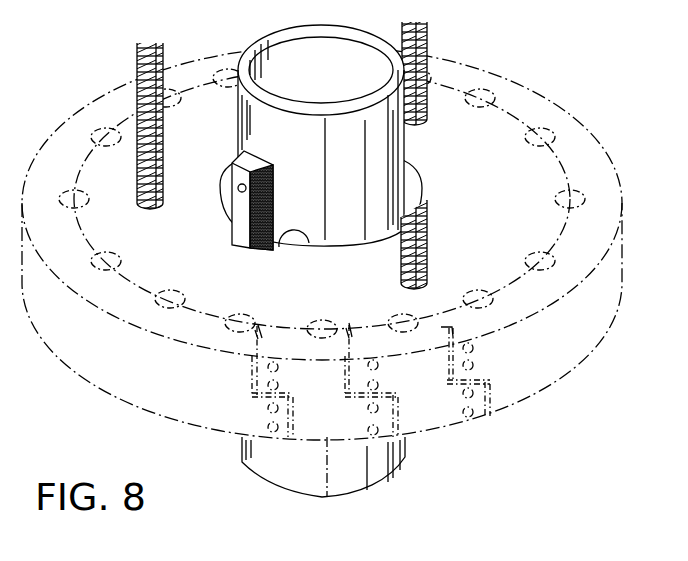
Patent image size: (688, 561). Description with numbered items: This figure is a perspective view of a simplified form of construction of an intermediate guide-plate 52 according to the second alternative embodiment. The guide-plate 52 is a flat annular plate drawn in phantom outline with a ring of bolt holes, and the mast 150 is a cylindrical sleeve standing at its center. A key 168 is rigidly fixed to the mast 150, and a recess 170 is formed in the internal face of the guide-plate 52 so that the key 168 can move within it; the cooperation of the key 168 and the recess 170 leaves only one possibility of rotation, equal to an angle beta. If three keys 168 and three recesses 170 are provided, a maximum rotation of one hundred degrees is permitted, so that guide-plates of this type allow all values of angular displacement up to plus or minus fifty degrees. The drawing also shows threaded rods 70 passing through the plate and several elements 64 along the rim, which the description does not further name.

The intermediate guide-plate 52 is at (543, 86).
The keys 64 is at (357, 443).
The threaded bolt 70 is at (137, 62).
The mast 150 is at (376, 191).
The key 168 is at (238, 208).
The recess 170 is at (315, 245).